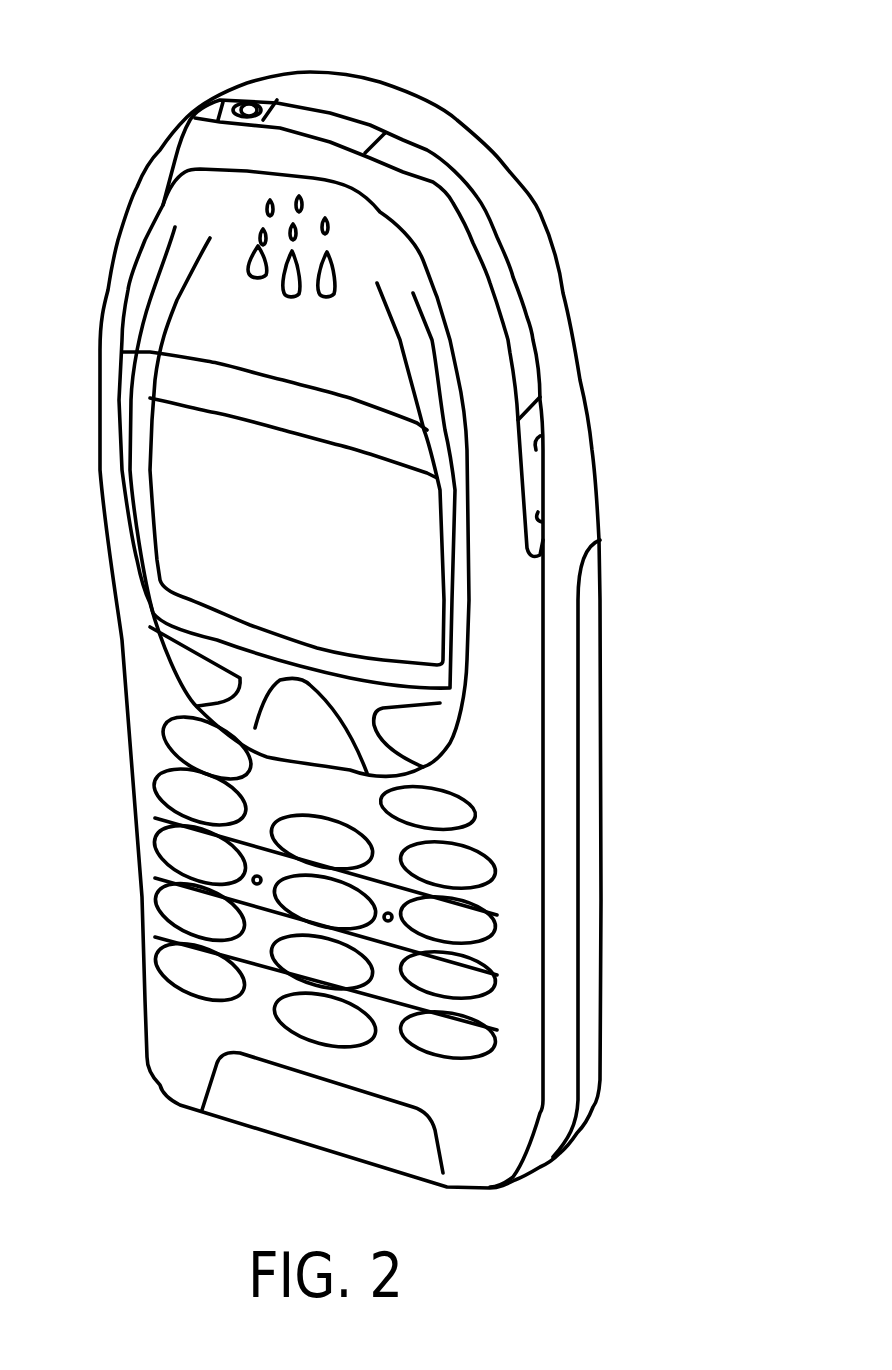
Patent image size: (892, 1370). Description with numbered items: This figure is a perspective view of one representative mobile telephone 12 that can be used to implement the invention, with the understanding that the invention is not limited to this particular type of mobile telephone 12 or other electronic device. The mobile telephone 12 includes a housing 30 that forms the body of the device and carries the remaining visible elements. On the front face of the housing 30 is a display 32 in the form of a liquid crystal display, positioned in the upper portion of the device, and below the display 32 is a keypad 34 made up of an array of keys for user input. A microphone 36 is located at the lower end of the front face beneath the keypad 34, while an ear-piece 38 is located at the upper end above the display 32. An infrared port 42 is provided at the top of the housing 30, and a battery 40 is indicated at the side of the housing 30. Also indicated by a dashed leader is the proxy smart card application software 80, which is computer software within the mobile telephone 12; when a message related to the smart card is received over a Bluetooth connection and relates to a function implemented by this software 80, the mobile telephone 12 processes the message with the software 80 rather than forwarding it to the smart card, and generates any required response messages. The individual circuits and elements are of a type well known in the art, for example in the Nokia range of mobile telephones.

The mobile telephone 12 is at (512, 90).
The housing 30 is at (553, 302).
The display 32 is at (412, 590).
The keypad 34 is at (447, 1050).
The microphone 36 is at (237, 1100).
The ear-piece 38 is at (280, 240).
The battery 40 is at (593, 1023).
The infrared port 42 is at (323, 118).
The proxy smart card application software 80 is at (600, 829).